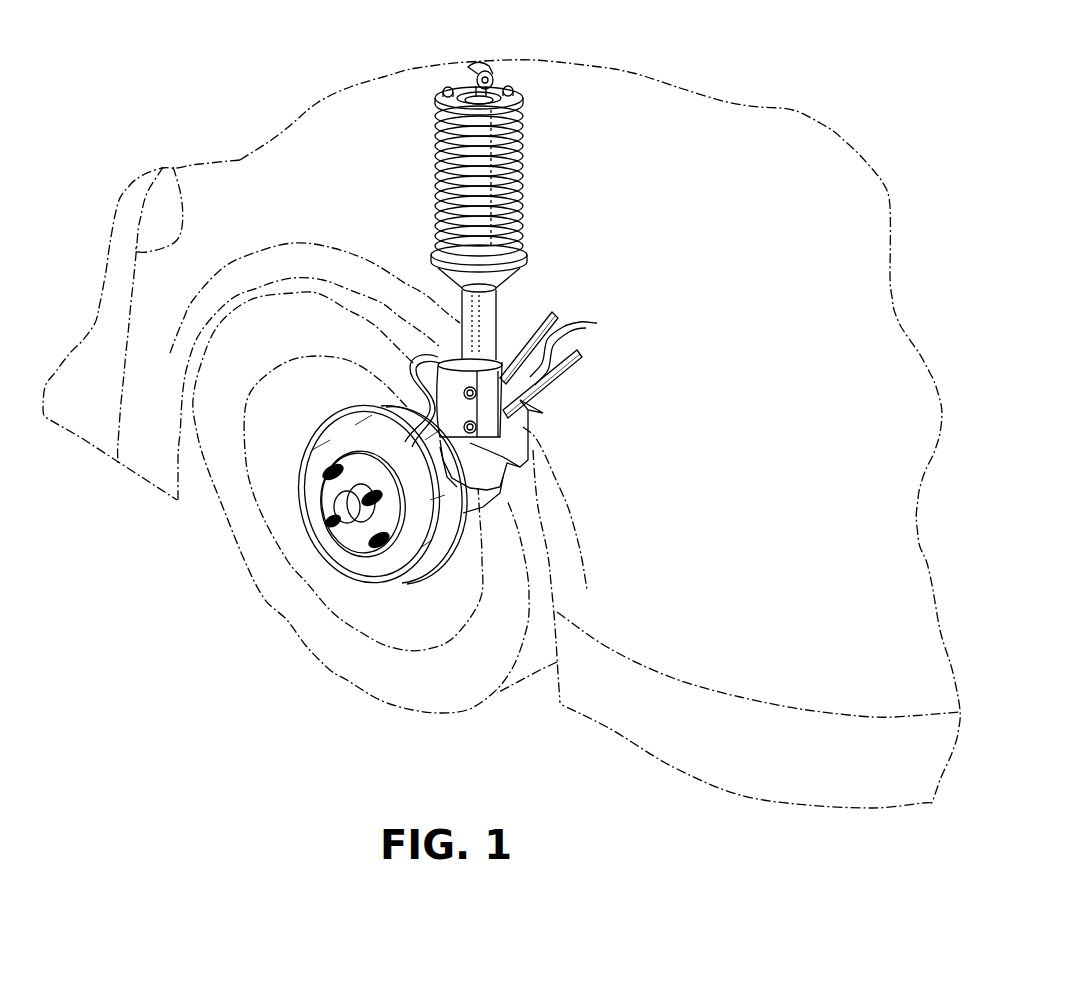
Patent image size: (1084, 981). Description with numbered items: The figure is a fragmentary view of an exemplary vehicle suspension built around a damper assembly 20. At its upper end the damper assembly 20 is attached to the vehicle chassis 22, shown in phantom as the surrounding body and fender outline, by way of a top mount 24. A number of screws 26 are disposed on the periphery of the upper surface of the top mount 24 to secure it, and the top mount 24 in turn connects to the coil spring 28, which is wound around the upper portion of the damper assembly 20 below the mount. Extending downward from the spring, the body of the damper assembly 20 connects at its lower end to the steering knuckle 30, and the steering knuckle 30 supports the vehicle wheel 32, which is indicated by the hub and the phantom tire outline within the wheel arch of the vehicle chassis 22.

The damper assembly 20 is at (497, 185).
The vehicle chassis 22 is at (177, 172).
The top mount 24 is at (433, 103).
The screws 26 is at (450, 92).
The coil spring 28 is at (435, 160).
The steering knuckle 30 is at (590, 323).
The vehicle wheel 32 is at (277, 577).